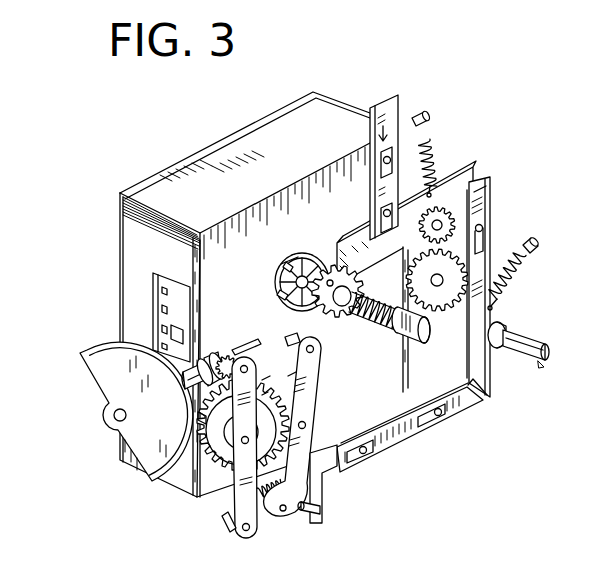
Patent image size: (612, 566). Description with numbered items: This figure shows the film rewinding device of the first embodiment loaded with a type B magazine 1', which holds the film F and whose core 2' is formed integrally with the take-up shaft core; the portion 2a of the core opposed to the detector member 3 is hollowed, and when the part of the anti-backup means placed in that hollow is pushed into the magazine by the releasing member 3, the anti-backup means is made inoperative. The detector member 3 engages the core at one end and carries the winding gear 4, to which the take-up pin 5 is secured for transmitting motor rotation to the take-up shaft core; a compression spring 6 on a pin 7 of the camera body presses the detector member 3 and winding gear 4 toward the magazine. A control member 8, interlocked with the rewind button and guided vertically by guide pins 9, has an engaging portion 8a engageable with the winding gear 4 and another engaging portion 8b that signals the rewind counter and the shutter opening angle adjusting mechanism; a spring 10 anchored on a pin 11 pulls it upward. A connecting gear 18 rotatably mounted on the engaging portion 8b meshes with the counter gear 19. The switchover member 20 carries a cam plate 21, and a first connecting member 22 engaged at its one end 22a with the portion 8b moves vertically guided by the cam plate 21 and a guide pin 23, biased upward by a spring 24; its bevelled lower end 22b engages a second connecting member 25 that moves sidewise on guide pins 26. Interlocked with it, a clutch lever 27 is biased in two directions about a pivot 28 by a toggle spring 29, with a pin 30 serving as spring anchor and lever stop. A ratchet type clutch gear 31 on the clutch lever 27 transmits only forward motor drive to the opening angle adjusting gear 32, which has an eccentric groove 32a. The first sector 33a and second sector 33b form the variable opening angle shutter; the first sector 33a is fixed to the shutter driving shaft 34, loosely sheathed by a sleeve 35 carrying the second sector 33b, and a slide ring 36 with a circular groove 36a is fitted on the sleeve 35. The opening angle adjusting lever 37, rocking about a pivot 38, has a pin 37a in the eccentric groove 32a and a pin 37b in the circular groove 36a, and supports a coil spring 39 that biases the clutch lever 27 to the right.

The type B magazine 1' is at (264, 294).
The film F is at (157, 297).
The core 2' is at (265, 280).
The hollowed portion 2a is at (290, 265).
The detector member 3 is at (298, 256).
The winding gear 4 is at (364, 284).
The take-up pin 5 is at (306, 258).
The compression spring 6 is at (372, 320).
The pin 7 is at (417, 346).
The control member 8 is at (387, 106).
The engaging portion 8a is at (347, 246).
The engaging portion 8b is at (478, 180).
The guide pins 9 is at (383, 207).
The spring 10 is at (433, 150).
The spring anchoring pin 11 is at (427, 112).
The connecting gear 18 is at (423, 226).
The counter gear 19 is at (440, 302).
The switchover member 20 is at (520, 337).
The cam plate 21 is at (497, 345).
The first connecting member 22 is at (494, 258).
The one end 22a is at (488, 190).
The lower end 22b is at (478, 400).
The guide pin 23 is at (484, 229).
The spring 24 is at (534, 256).
The second connecting member 25 is at (400, 442).
The guide pins 26 is at (440, 415).
The clutch lever 27 is at (302, 430).
The pivot 28 is at (315, 352).
The toggle spring 29 is at (285, 512).
The pin 30 is at (323, 508).
The clutch gear 31 is at (315, 402).
The opening angle adjusting gear 32 is at (198, 443).
The eccentric groove 32a is at (277, 384).
The first sector 33a is at (108, 373).
The second sector 33b is at (140, 343).
The shutter driving shaft 34 is at (113, 415).
The sleeve 35 is at (182, 381).
The slide ring 36 is at (208, 356).
The circular groove 36a is at (228, 352).
The opening angle adjusting lever 37 is at (240, 492).
The pin 37a is at (198, 418).
The pin 37b is at (292, 378).
The pivot 38 is at (228, 520).
The coil spring 39 is at (263, 500).